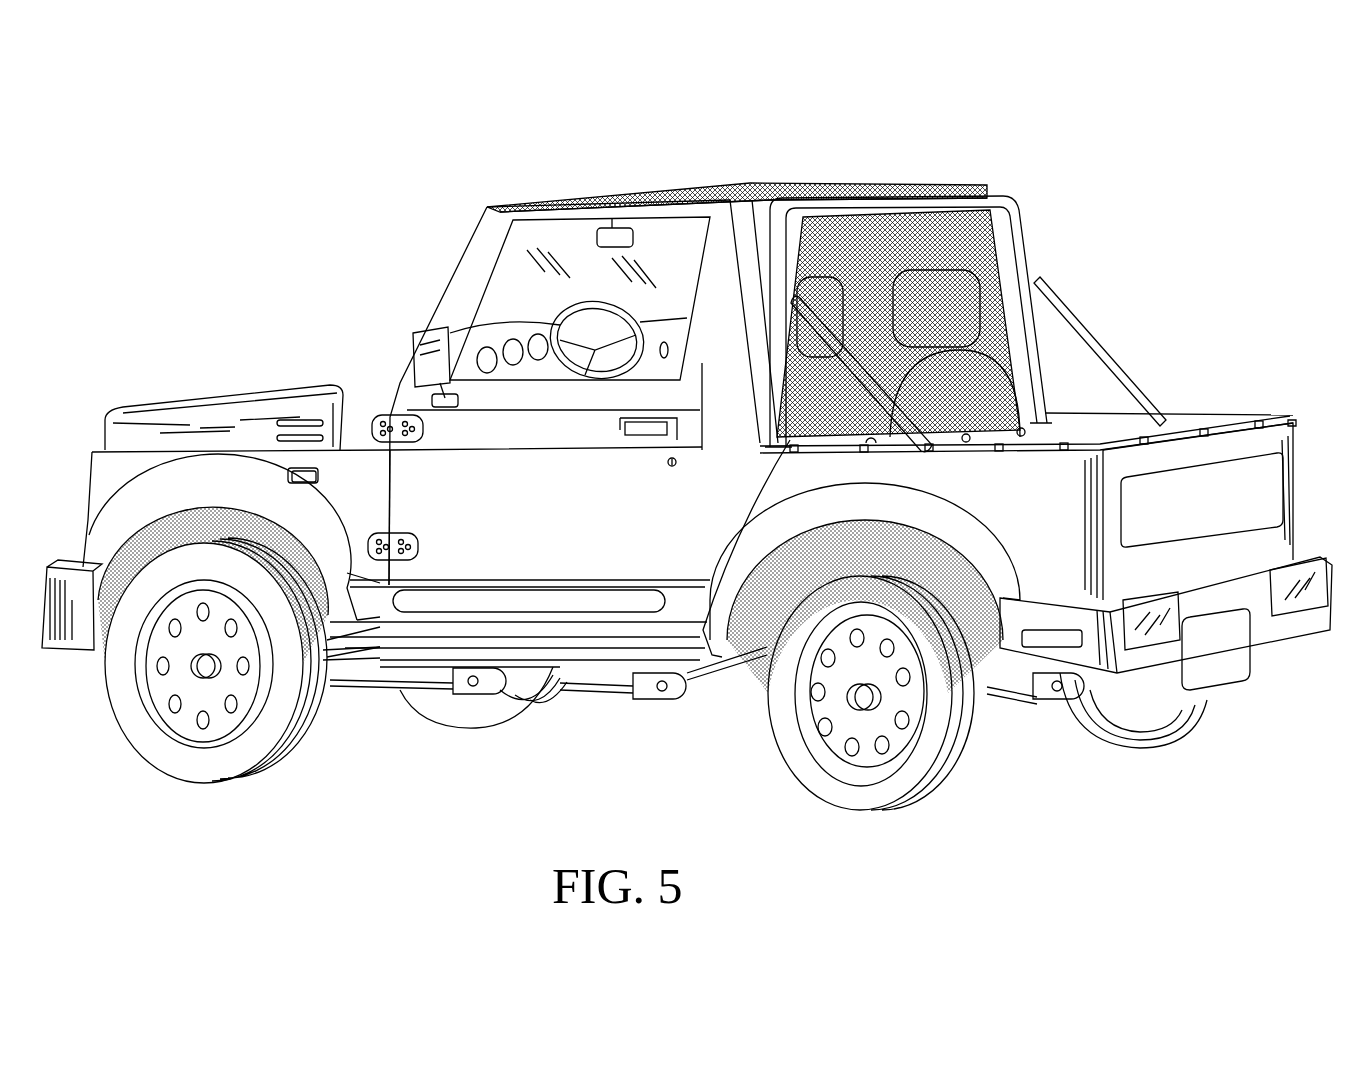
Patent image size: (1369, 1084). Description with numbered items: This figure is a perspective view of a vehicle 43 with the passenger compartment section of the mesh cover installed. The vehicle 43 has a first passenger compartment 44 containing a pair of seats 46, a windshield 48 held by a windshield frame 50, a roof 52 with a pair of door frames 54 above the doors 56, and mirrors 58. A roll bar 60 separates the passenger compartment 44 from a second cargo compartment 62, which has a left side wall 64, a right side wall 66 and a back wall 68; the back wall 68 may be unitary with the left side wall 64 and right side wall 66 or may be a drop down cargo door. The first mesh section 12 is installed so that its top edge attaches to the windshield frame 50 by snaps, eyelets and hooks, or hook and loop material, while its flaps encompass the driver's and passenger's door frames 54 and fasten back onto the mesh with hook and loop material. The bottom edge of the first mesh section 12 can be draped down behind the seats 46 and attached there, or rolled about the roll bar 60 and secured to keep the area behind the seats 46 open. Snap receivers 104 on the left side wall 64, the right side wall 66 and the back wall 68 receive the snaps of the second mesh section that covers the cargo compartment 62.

The first mesh section 12 is at (834, 178).
The vehicle 43 is at (162, 388).
The first passenger compartment 44 is at (552, 288).
The seats 46 is at (957, 187).
The windshield 48 is at (528, 228).
The windshield frame 50 is at (456, 240).
The roof 52 is at (650, 187).
The door frames 54 is at (585, 217).
The doors 56 is at (523, 512).
The mirrors 58 is at (413, 365).
The roll bar 60 is at (1013, 203).
The second cargo compartment 62 is at (1189, 388).
The left side wall 64 is at (1037, 503).
The right side wall 66 is at (1243, 413).
The back wall 68 is at (1200, 508).
The snap receivers 104 is at (1293, 422).